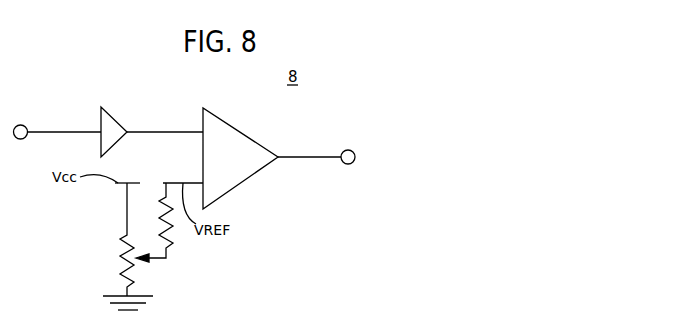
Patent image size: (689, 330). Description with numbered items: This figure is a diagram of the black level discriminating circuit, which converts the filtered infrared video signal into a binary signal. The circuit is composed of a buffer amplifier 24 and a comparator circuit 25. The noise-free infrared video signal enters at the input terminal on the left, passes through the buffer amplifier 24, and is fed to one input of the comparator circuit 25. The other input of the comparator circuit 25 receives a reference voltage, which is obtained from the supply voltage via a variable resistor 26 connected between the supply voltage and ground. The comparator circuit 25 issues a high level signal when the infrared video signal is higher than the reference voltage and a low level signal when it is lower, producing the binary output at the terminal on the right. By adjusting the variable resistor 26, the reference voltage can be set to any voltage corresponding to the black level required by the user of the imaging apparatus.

The buffer amplifier 24 is at (116, 118).
The comparator circuit 25 is at (240, 131).
The variable resistor 26 is at (157, 259).